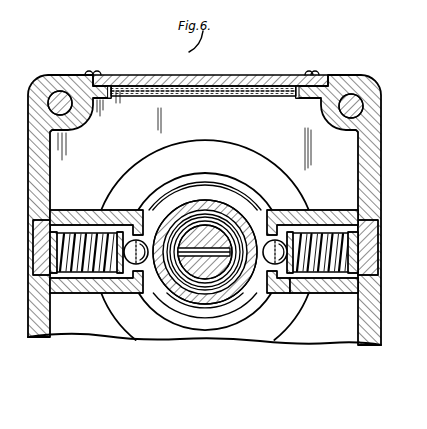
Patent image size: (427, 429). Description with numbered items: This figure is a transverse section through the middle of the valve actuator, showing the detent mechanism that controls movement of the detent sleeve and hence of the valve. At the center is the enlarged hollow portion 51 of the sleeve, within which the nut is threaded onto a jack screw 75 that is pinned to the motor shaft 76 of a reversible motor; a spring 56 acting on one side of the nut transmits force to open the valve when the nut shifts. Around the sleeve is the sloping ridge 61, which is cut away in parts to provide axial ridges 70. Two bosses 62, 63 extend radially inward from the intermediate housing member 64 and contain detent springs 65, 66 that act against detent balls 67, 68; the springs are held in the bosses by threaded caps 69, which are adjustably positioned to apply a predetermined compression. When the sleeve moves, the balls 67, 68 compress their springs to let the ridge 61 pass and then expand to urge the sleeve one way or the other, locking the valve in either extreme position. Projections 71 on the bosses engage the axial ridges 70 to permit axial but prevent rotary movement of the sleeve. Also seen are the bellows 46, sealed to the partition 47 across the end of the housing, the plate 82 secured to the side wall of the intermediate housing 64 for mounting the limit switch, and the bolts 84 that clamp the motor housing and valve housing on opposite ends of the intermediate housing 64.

The bellows 46 is at (226, 173).
The partition 47 is at (213, 139).
The enlarged hollow portion 51 is at (192, 306).
The spring 56 is at (214, 302).
The ridge 61 is at (203, 182).
The boss 62 is at (319, 210).
The boss 63 is at (75, 210).
The intermediate housing member 64 is at (28, 136).
The detent spring 65 is at (321, 296).
The detent spring 66 is at (90, 328).
The detent ball 67 is at (300, 297).
The detent ball 68 is at (131, 295).
The threaded cap 69 is at (37, 258).
The axial ridge 70 is at (288, 232).
The projection 71 is at (143, 213).
The jack screw 75 is at (203, 302).
The motor shaft 76 is at (195, 300).
The plate 82 is at (232, 75).
The bolt 84 is at (48, 105).